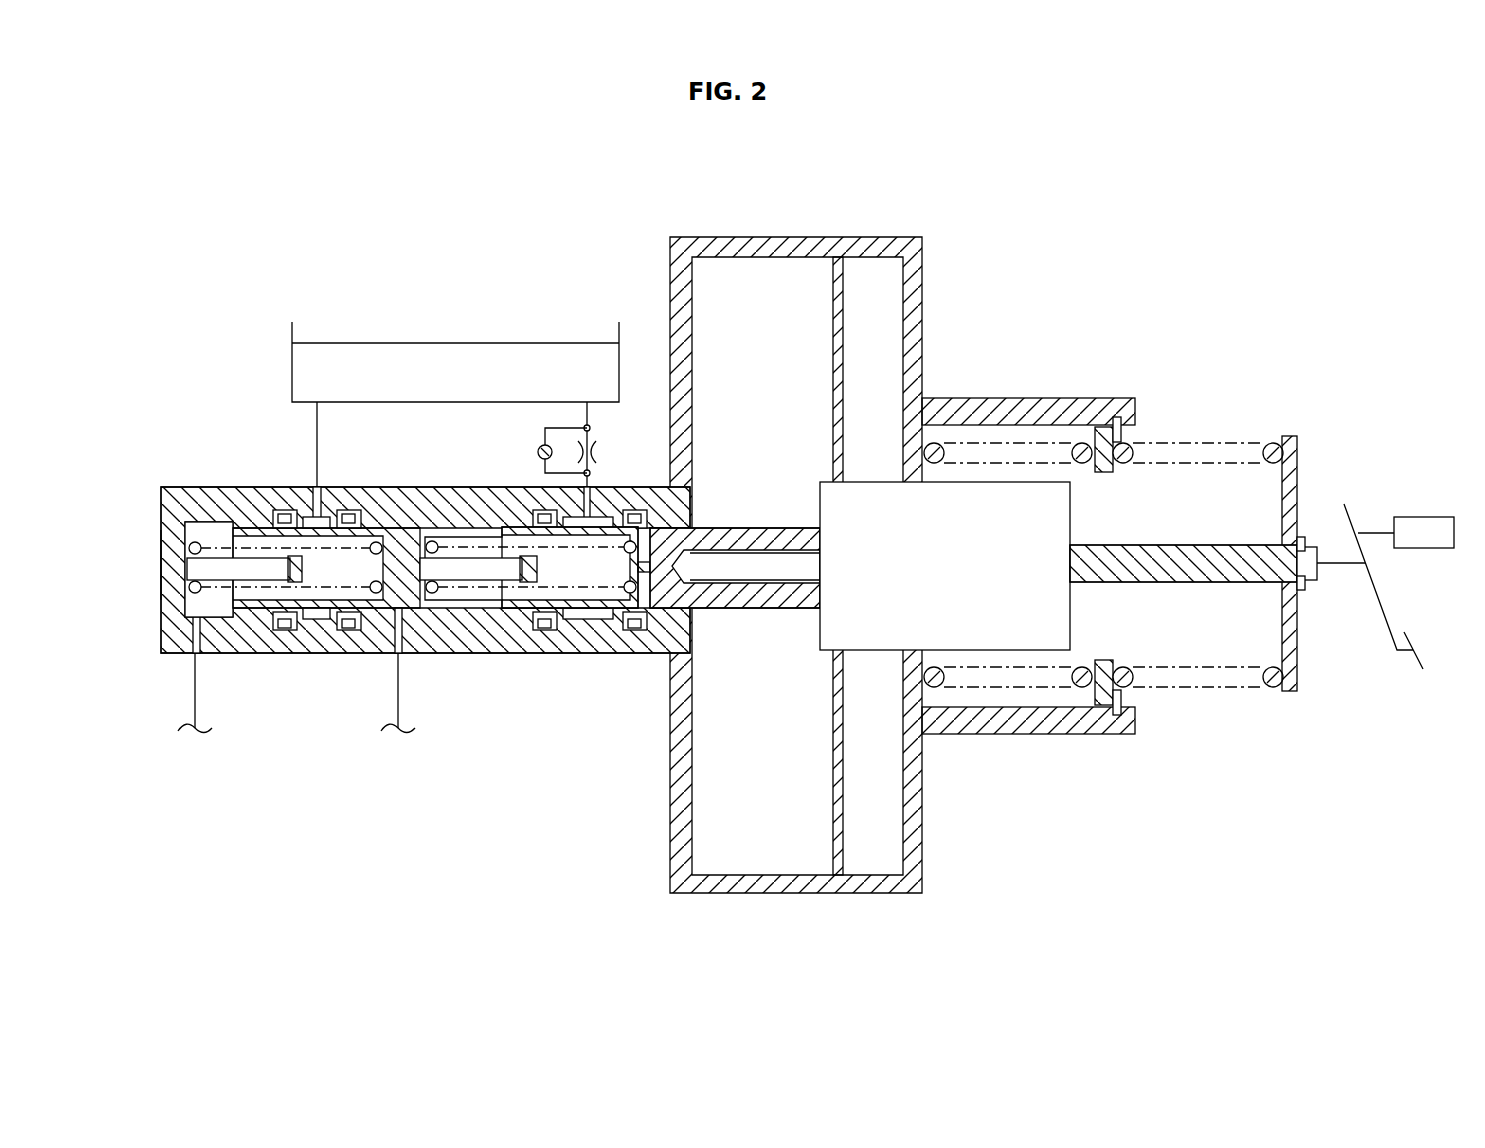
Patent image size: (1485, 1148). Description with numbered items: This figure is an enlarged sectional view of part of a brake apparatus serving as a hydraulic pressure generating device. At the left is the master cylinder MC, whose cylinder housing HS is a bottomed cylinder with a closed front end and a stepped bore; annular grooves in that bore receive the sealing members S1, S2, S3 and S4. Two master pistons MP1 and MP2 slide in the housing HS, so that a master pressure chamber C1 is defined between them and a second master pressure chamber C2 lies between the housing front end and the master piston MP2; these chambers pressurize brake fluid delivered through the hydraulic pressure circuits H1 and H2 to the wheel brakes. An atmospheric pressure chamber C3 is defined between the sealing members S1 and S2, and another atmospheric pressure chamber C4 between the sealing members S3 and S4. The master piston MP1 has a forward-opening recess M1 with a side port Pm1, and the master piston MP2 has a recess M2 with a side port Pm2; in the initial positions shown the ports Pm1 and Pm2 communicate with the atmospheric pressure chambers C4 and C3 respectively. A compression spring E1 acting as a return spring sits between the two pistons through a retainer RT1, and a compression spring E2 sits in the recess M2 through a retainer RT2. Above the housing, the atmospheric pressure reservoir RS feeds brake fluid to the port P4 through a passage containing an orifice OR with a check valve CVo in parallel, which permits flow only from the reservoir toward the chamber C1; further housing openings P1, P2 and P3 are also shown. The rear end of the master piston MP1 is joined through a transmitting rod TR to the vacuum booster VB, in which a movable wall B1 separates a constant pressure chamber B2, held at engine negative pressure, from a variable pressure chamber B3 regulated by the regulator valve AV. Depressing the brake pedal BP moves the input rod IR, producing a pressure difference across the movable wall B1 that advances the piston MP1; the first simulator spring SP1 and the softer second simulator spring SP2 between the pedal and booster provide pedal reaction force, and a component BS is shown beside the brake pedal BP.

The vacuum booster VB is at (822, 213).
The movable wall B1 is at (837, 817).
The constant pressure chamber B2 is at (765, 837).
The variable pressure chamber B3 is at (877, 850).
The master cylinder MC is at (163, 481).
The cylinder housing HS is at (163, 547).
The third port P3 is at (334, 460).
The atmospheric pressure chamber C3 is at (317, 622).
The port P4 is at (589, 497).
The atmospheric pressure chamber C4 is at (587, 617).
The second port P2 is at (188, 643).
The first port P1 is at (392, 640).
The hydraulic pressure circuit H2 is at (193, 709).
The hydraulic pressure circuit H1 is at (398, 709).
The annular sealing member S1 is at (292, 630).
The annular sealing member S2 is at (337, 630).
The annular sealing member S3 is at (548, 630).
The annular sealing member S4 is at (637, 630).
The recess M2 is at (227, 612).
The recess M1 is at (503, 592).
The transmitting rod TR is at (683, 582).
The master pressure chamber C1 is at (433, 613).
The master pressure chamber C2 is at (197, 607).
The compression spring E2 is at (216, 537).
The retainer RT2 is at (213, 545).
The port Pm2 is at (302, 533).
The master piston MP2 is at (362, 540).
The retainer RT1 is at (428, 545).
The compression spring E1 is at (440, 535).
The master piston MP1 is at (482, 540).
The port Pm1 is at (530, 535).
The atmospheric pressure reservoir RS is at (292, 343).
The check valve CVo is at (538, 448).
The orifice OR is at (600, 452).
The regulator valve AV is at (960, 517).
The second simulator spring SP2 is at (1005, 690).
The first simulator spring SP1 is at (1187, 690).
The input rod IR is at (1245, 590).
The brake pedal BP is at (1385, 625).
The brake switch BS is at (1418, 525).